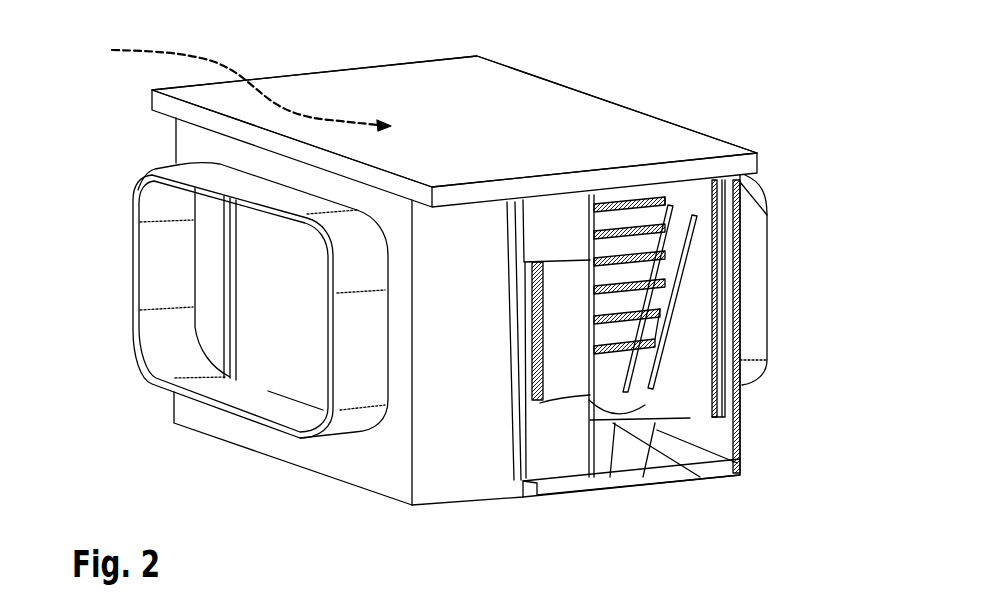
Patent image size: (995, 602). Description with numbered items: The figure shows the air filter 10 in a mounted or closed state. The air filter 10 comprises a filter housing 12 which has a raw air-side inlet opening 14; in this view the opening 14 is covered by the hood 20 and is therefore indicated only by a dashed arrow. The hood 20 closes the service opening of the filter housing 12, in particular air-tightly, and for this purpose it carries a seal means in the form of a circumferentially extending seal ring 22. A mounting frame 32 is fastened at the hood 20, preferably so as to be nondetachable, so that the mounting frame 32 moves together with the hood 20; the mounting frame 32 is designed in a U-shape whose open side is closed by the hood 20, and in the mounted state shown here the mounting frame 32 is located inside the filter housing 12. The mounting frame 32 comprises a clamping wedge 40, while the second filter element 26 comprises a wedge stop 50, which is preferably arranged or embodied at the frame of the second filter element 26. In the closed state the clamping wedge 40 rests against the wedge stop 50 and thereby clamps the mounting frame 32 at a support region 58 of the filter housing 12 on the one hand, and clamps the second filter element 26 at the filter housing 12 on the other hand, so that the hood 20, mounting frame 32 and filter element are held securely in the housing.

The air filter 10 is at (674, 104).
The filter housing 12 is at (190, 150).
The raw air-side inlet opening 14 is at (234, 81).
The hood 20 is at (747, 163).
The seal ring 22 is at (720, 353).
The second filter element 26 is at (680, 378).
The mounting frame 32 is at (568, 386).
The clamping wedge 40 is at (646, 250).
The wedge stop 50 is at (683, 302).
The support region 58 is at (527, 482).